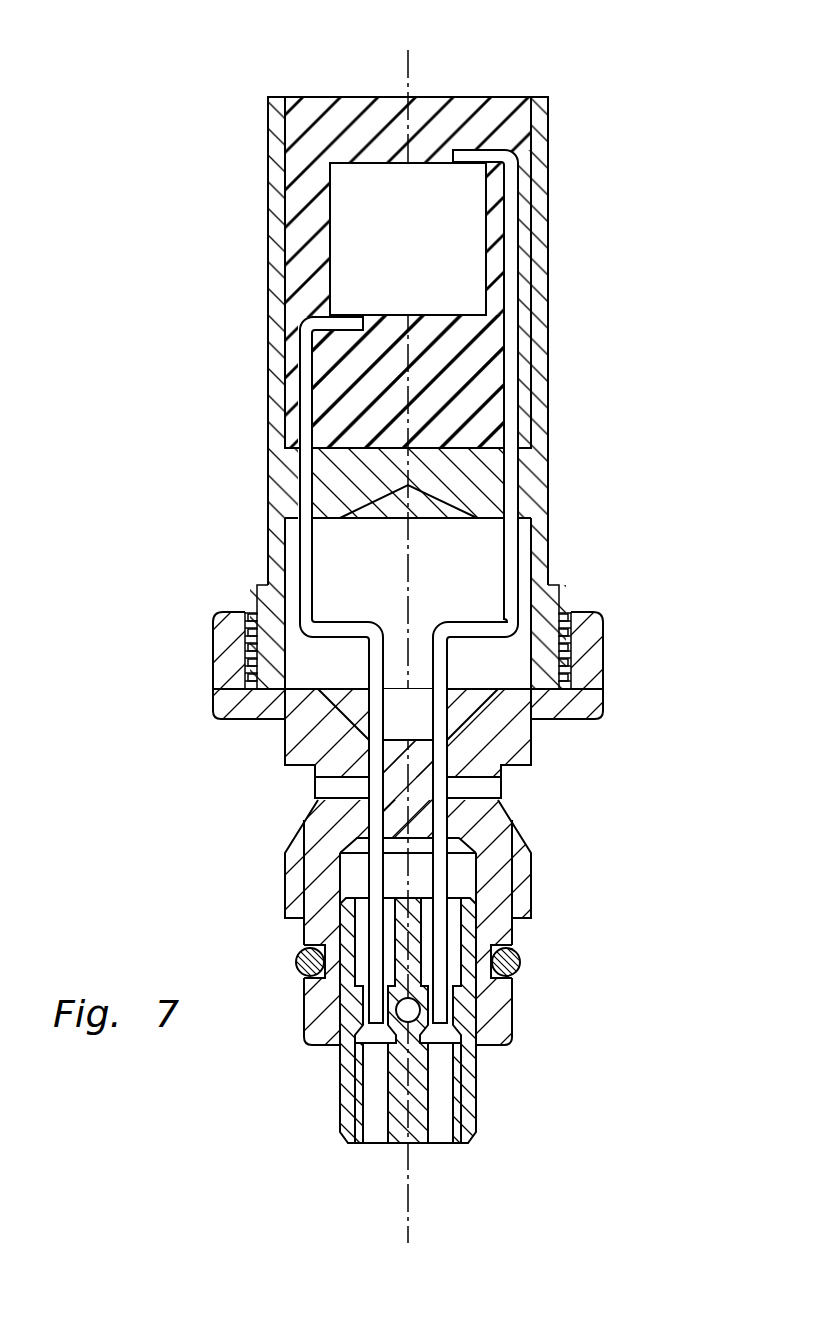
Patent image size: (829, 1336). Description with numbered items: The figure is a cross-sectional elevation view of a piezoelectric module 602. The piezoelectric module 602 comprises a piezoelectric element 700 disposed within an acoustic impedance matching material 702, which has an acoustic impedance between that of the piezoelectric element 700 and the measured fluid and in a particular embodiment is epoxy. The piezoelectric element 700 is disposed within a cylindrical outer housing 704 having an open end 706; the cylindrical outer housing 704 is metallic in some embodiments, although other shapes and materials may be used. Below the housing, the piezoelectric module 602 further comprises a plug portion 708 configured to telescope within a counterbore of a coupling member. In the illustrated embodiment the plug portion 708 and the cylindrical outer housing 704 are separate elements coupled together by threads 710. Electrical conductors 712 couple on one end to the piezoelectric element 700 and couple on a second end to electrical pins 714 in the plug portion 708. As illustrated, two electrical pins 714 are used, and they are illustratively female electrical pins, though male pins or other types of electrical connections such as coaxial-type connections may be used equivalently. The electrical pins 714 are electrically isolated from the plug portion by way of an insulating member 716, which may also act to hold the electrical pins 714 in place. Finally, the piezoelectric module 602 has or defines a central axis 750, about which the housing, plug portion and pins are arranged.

The piezoelectric module 602 is at (152, 326).
The piezoelectric element 700 is at (345, 253).
The acoustic impedance matching material 702 is at (485, 386).
The cylindrical outer housing 704 is at (535, 499).
The open end 706 is at (368, 72).
The plug portion 708 is at (600, 980).
The threads 710 is at (570, 642).
The electrical conductors 712 is at (470, 628).
The electrical pins 714 is at (457, 1097).
The insulating member 716 is at (402, 1143).
The central axis 750 is at (410, 1228).